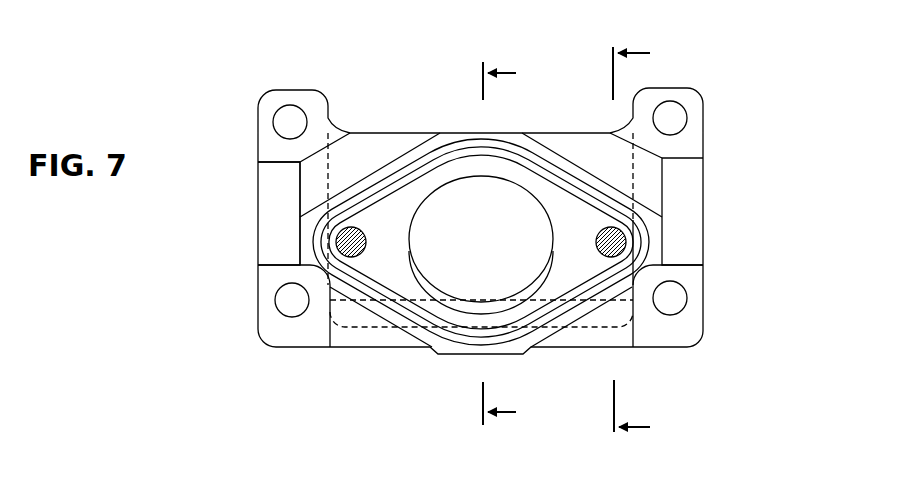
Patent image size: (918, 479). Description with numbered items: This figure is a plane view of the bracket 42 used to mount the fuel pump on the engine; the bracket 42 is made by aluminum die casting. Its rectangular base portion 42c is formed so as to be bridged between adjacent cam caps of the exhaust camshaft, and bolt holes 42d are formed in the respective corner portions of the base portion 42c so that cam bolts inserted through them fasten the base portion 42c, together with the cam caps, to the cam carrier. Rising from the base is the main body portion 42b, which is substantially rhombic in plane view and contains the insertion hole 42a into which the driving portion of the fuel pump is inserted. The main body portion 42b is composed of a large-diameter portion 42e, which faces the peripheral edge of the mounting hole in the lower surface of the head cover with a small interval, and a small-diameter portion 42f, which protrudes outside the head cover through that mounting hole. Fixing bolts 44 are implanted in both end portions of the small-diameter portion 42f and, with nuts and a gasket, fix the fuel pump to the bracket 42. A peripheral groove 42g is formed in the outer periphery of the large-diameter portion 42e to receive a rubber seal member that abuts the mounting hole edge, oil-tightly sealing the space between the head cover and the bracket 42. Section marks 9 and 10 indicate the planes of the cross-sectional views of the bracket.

The bracket 42 is at (713, 180).
The insertion hole 42a is at (455, 186).
The main body portion 42b is at (575, 244).
The base portion 42c is at (258, 193).
The bolt holes 42d is at (293, 106).
The large-diameter portion 42e is at (646, 212).
The small-diameter portion 42f is at (640, 228).
The peripheral groove 42g is at (562, 176).
The fixing bolts 44 is at (362, 238).
The section line IX-IX 9 is at (509, 245).
The section line X-X 10 is at (651, 243).